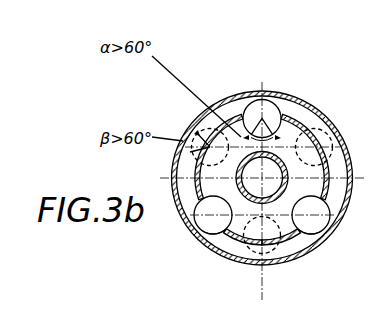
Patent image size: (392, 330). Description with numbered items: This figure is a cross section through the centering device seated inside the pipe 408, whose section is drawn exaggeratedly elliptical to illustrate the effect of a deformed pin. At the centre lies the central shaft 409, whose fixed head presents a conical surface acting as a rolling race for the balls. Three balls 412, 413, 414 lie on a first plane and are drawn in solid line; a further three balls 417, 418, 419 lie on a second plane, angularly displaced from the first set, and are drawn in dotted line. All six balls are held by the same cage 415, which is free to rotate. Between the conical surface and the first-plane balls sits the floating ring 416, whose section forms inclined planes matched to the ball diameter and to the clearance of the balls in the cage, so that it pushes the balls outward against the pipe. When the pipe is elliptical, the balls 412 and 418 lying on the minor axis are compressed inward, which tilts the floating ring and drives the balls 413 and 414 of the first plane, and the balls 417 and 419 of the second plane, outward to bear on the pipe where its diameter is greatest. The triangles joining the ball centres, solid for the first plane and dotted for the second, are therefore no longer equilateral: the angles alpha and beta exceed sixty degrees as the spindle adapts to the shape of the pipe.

The pipe 408 is at (261, 119).
The central shaft 409 is at (199, 157).
The ball 412 is at (265, 112).
The ball 413 is at (202, 220).
The ball 414 is at (315, 221).
The cage 415 is at (292, 121).
The floating ring 416 is at (285, 223).
The ball 417 is at (188, 130).
The ball 418 is at (250, 223).
The ball 419 is at (327, 141).